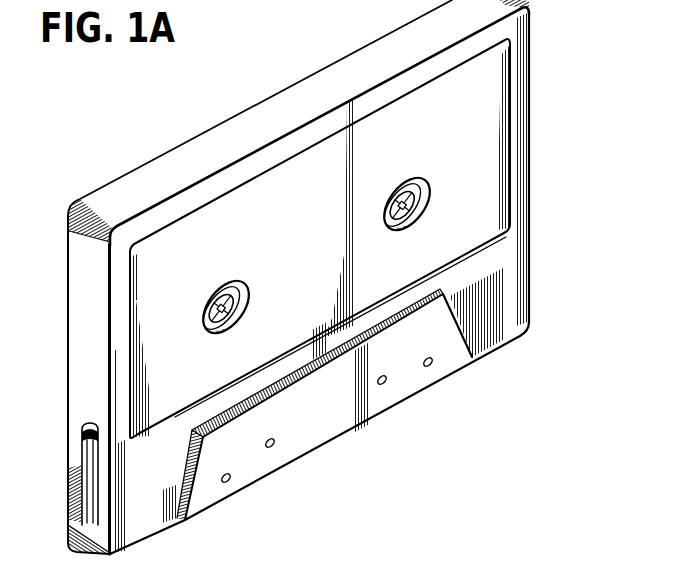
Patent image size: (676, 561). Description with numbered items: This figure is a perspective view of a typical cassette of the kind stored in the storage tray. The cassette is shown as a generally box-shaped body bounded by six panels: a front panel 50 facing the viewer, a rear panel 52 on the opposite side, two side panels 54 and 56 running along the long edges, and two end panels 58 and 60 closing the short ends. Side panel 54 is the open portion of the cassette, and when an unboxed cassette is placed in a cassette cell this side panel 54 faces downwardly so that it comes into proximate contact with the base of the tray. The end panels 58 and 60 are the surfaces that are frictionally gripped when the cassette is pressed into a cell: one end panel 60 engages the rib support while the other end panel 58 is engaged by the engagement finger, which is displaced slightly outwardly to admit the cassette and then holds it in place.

The front panel 50 is at (474, 273).
The rear panel 52 is at (68, 282).
The side panel 54 is at (278, 107).
The side panel 56 is at (322, 442).
The end panel 58 is at (88, 396).
The end panel 60 is at (531, 126).